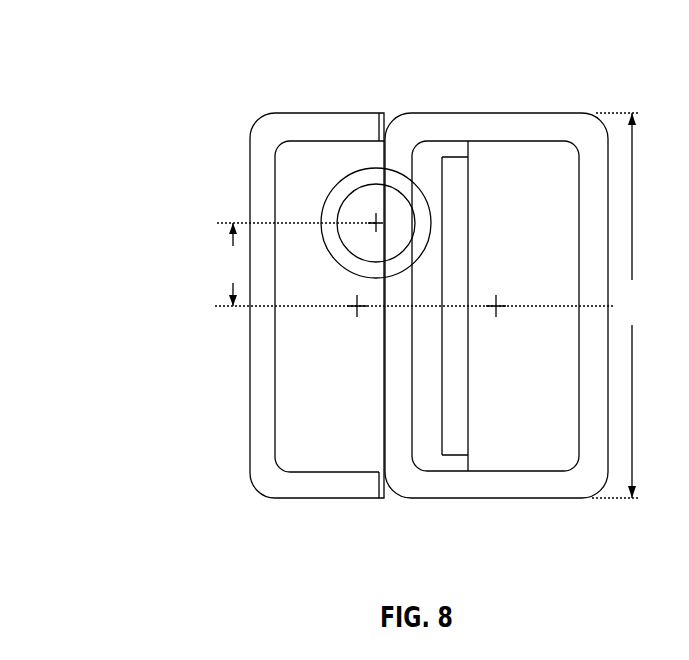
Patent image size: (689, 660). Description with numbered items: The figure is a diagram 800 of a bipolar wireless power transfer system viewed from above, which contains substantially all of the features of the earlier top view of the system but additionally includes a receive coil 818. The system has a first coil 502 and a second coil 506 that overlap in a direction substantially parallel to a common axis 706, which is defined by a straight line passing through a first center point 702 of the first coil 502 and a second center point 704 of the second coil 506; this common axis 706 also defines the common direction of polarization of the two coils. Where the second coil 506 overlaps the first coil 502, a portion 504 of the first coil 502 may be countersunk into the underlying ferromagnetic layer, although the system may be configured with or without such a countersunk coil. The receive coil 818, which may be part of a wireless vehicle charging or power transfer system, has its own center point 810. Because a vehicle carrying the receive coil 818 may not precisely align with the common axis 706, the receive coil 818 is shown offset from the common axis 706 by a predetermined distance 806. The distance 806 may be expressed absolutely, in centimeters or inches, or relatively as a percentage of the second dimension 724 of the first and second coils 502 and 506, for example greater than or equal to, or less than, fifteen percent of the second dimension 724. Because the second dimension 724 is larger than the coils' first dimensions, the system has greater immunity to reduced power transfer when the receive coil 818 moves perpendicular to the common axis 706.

The diagram 800 is at (223, 84).
The first coil 502 is at (330, 492).
The second coil 506 is at (515, 118).
The portion of the first coil 504 is at (465, 148).
The receive coil 818 is at (343, 193).
The center point 810 is at (368, 223).
The first center point 702 is at (353, 310).
The second center point 704 is at (502, 310).
The common axis 706 is at (215, 306).
The predetermined distance 806 is at (296, 264).
The second dimension 724 is at (617, 305).